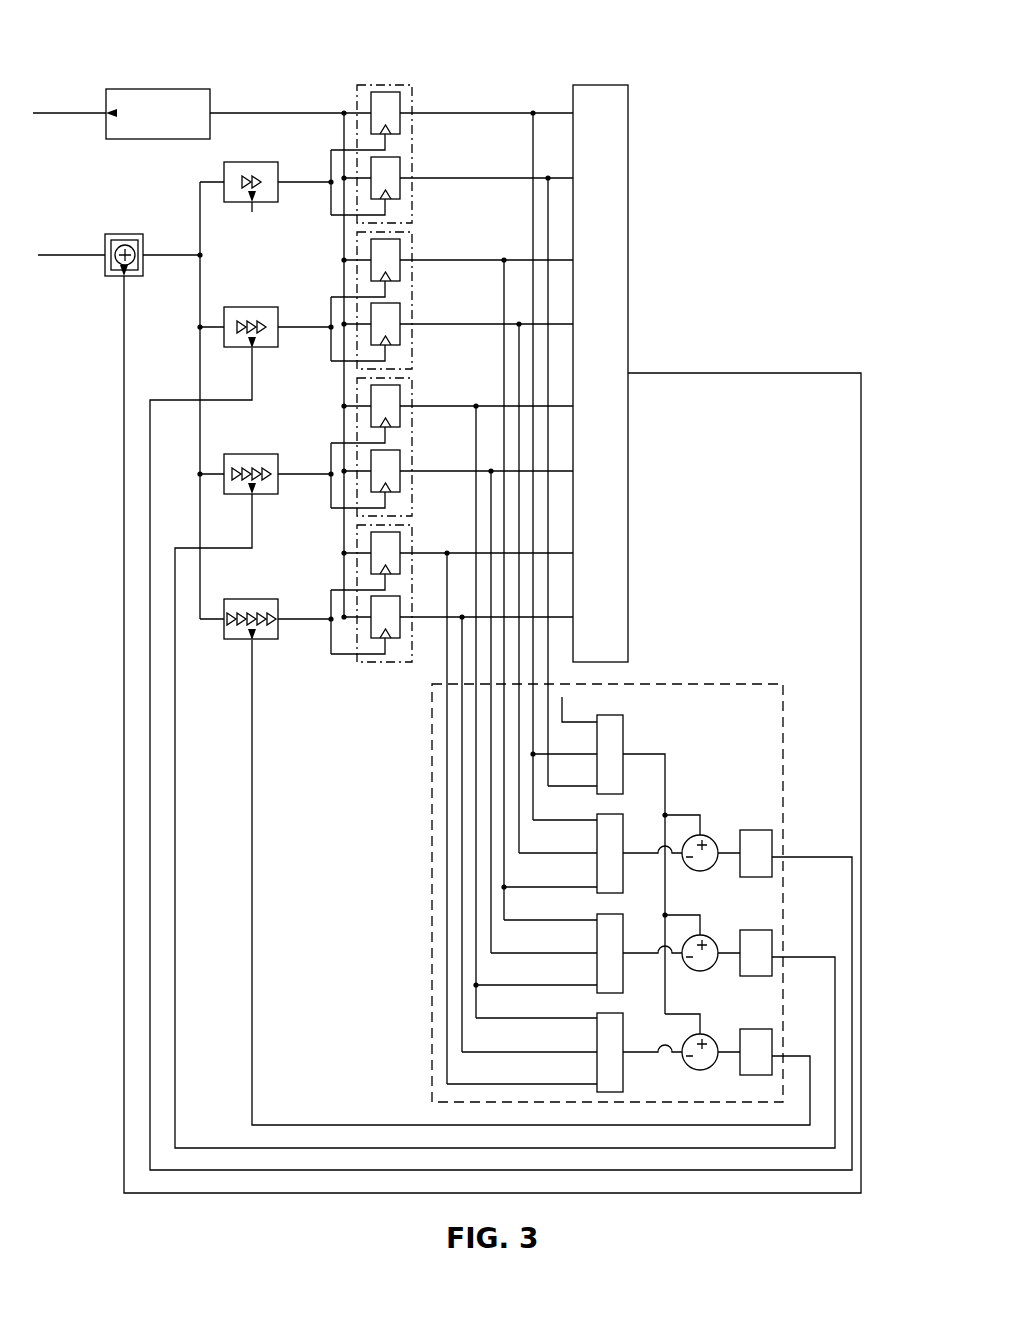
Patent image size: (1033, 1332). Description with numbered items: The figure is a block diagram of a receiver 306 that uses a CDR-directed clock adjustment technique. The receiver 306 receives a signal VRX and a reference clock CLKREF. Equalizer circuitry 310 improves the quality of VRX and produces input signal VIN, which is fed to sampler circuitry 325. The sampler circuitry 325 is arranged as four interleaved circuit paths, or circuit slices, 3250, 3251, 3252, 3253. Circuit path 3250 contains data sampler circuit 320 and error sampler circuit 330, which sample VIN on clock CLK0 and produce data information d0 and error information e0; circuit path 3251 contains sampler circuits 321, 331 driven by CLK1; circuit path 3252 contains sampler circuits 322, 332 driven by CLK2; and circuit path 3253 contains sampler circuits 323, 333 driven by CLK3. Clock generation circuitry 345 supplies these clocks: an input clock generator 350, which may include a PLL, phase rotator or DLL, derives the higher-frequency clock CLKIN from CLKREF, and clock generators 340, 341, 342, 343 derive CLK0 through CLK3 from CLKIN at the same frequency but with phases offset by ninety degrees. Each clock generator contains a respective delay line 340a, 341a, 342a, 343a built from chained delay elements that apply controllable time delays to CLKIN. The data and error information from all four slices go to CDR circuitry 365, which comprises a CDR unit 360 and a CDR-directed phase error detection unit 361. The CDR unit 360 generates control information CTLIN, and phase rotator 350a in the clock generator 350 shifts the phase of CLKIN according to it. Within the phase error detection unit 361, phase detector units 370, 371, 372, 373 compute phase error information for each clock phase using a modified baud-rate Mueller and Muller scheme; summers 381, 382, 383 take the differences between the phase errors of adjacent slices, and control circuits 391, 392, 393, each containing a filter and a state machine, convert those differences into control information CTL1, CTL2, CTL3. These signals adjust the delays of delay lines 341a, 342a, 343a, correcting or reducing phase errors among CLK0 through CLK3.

The receiver 306 is at (718, 48).
The equalizer circuitry 310 is at (156, 89).
The sampler circuit 320 is at (400, 128).
The sampler circuit 321 is at (400, 275).
The sampler circuit 322 is at (400, 421).
The sampler circuit 323 is at (371, 543).
The sampler circuitry 325 is at (376, 690).
The circuit path 3250 is at (357, 125).
The circuit path 3251 is at (357, 271).
The circuit path 3252 is at (357, 417).
The circuit path 3253 is at (357, 568).
The sampler circuit 330 is at (400, 193).
The sampler circuit 331 is at (400, 339).
The sampler circuit 332 is at (400, 486).
The sampler circuit 333 is at (371, 628).
The clock generator 340 is at (250, 162).
The delay line 340a is at (256, 204).
The clock generator 341 is at (250, 307).
The delay line 341a is at (256, 350).
The clock generator 342 is at (250, 454).
The delay line 342a is at (256, 496).
The clock generator 343 is at (250, 599).
The delay line 343a is at (256, 642).
The clock generation circuitry 345 is at (124, 178).
The clock generator 350 is at (125, 234).
The phase rotator 350a is at (114, 278).
The CDR unit 360 is at (601, 85).
The CDR-directed phase error detection unit 361 is at (700, 684).
The CDR circuitry 365 is at (756, 326).
The phase detector unit 370 is at (610, 715).
The phase detector unit 371 is at (610, 814).
The phase detector unit 372 is at (610, 914).
The phase detector unit 373 is at (610, 1013).
The summer 381 is at (706, 870).
The summer 382 is at (706, 970).
The summer 383 is at (706, 1069).
The control circuit 391 is at (756, 830).
The control circuit 392 is at (756, 930).
The control circuit 393 is at (756, 1029).